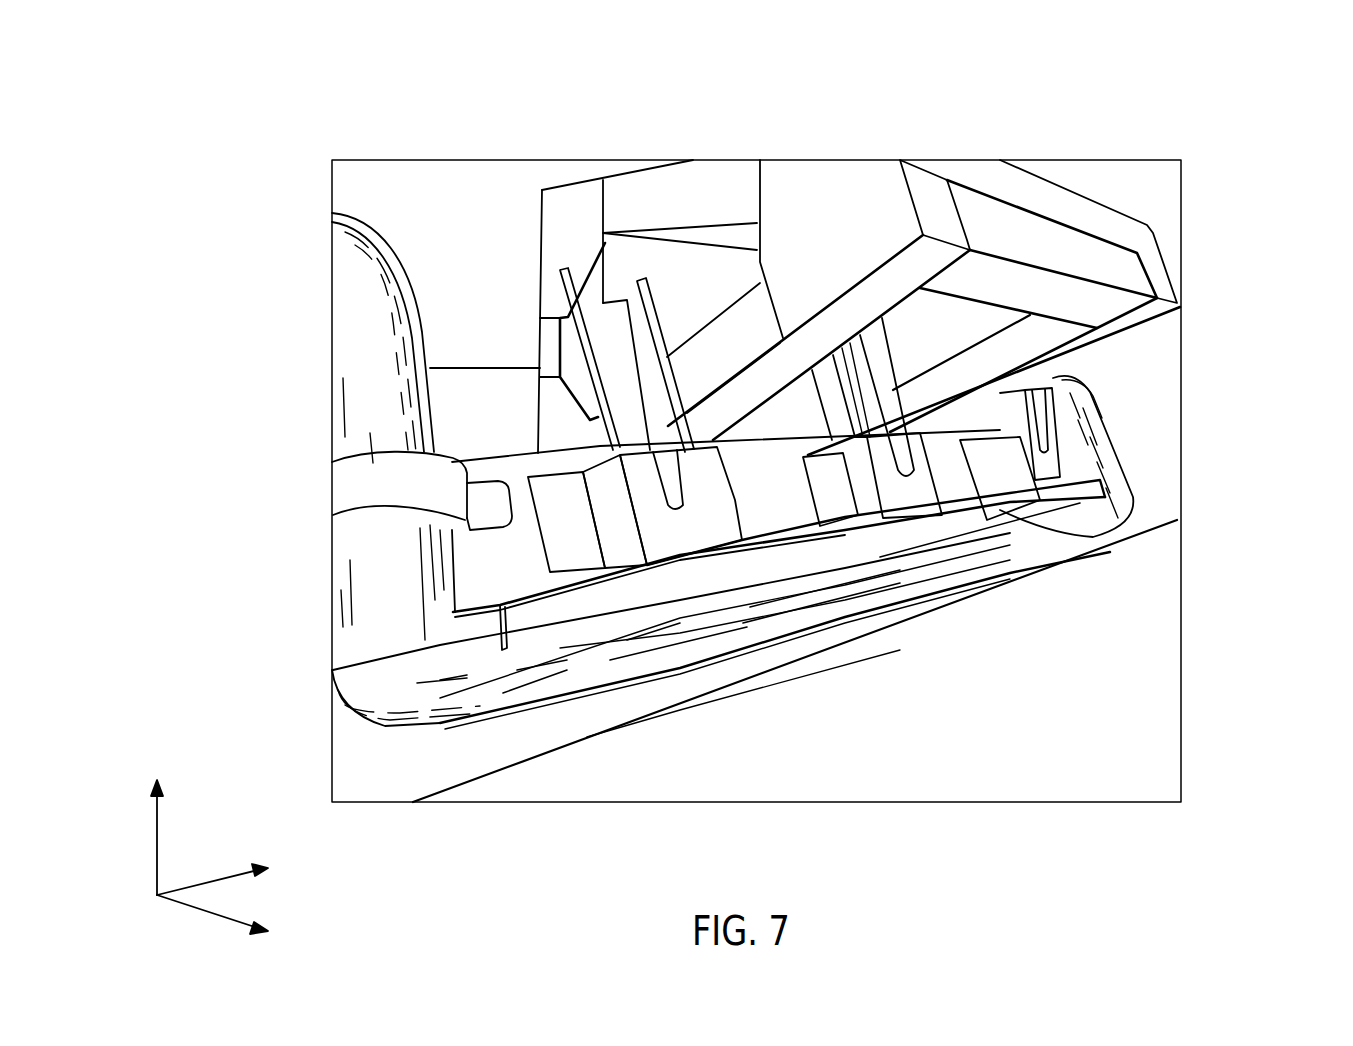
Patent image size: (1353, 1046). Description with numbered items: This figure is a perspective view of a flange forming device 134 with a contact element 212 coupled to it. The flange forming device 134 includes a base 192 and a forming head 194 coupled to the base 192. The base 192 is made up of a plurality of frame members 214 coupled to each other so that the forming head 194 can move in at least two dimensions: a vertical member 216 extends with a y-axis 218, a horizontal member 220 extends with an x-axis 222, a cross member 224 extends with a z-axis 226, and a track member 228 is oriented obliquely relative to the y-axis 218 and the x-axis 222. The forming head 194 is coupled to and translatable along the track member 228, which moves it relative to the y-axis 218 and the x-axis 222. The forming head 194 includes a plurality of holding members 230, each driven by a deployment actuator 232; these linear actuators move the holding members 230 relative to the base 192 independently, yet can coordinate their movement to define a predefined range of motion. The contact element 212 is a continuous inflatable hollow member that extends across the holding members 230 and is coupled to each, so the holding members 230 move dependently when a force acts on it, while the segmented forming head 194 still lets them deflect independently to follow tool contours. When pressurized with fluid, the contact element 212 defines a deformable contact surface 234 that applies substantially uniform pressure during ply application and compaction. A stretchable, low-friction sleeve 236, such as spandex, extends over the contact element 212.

The flange forming device 134 is at (1002, 113).
The base 192 is at (1167, 250).
The frame members 214 is at (924, 307).
The forming head 194 is at (1087, 433).
The contact element 212 is at (367, 643).
The vertical member 216 is at (550, 340).
The y-axis 218 is at (157, 835).
The horizontal member 220 is at (650, 178).
The x-axis 222 is at (205, 912).
The cross member 224 is at (1092, 243).
The z-axis 226 is at (212, 880).
The track member 228 is at (735, 317).
The holding members 230 is at (1043, 502).
The deployment actuator 232 is at (1110, 487).
The deformable contact surface 234 is at (503, 720).
The sleeve 236 is at (543, 700).